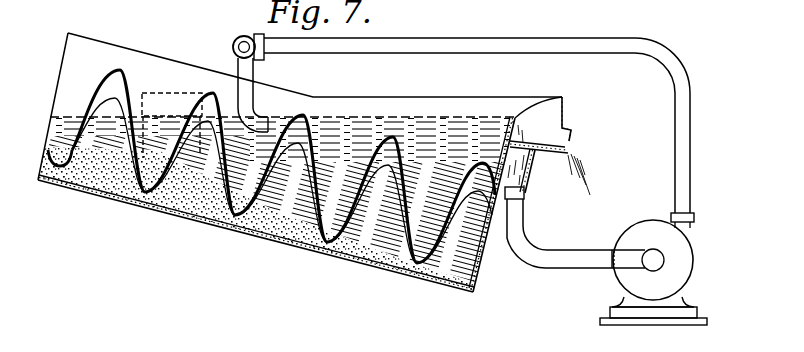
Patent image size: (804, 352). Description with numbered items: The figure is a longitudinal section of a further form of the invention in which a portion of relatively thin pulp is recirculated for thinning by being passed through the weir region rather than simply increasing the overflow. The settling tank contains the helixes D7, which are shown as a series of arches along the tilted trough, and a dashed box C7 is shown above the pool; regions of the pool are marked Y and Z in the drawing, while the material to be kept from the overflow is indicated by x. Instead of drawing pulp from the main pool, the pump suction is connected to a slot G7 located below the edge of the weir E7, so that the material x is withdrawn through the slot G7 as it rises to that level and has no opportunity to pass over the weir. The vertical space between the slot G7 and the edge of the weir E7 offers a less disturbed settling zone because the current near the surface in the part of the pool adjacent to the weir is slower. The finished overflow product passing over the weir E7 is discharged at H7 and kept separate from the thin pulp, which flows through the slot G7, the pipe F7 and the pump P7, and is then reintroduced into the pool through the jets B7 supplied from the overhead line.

The helixes D7 is at (124, 72).
The float box C7 is at (165, 93).
The jets B7 is at (257, 127).
The slot G7 is at (505, 150).
The weir E7 is at (560, 97).
The discharge H7 is at (578, 143).
The pipe F7 is at (522, 197).
The pump P7 is at (684, 260).
The liquid Y is at (391, 158).
The material x is at (366, 223).
The settled sediment Z is at (256, 217).